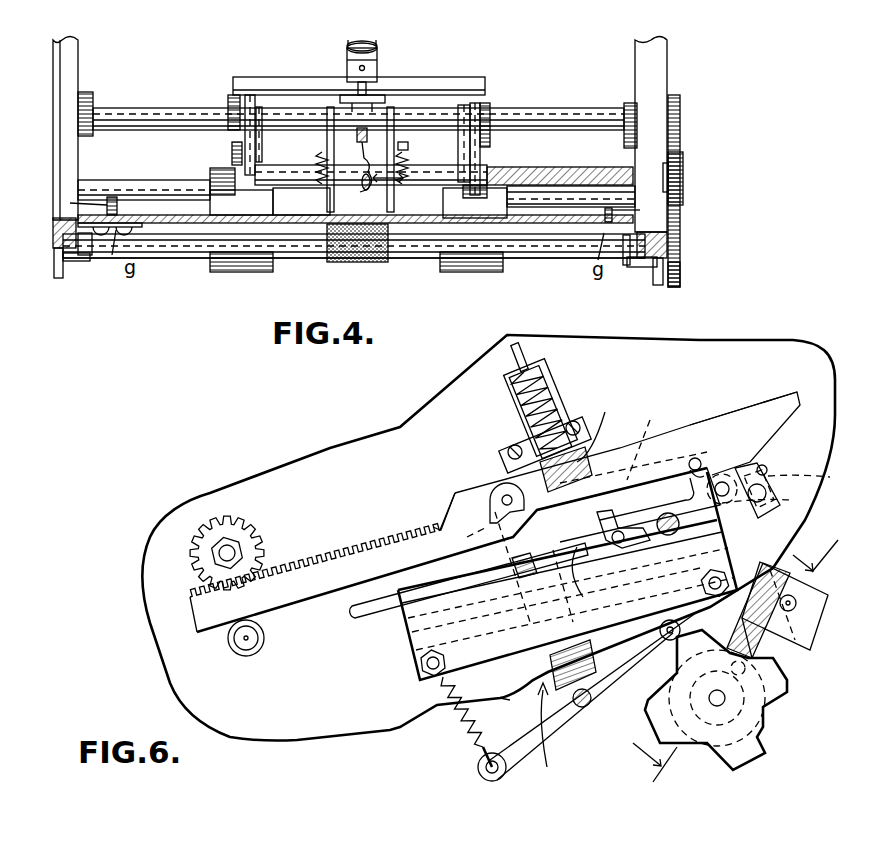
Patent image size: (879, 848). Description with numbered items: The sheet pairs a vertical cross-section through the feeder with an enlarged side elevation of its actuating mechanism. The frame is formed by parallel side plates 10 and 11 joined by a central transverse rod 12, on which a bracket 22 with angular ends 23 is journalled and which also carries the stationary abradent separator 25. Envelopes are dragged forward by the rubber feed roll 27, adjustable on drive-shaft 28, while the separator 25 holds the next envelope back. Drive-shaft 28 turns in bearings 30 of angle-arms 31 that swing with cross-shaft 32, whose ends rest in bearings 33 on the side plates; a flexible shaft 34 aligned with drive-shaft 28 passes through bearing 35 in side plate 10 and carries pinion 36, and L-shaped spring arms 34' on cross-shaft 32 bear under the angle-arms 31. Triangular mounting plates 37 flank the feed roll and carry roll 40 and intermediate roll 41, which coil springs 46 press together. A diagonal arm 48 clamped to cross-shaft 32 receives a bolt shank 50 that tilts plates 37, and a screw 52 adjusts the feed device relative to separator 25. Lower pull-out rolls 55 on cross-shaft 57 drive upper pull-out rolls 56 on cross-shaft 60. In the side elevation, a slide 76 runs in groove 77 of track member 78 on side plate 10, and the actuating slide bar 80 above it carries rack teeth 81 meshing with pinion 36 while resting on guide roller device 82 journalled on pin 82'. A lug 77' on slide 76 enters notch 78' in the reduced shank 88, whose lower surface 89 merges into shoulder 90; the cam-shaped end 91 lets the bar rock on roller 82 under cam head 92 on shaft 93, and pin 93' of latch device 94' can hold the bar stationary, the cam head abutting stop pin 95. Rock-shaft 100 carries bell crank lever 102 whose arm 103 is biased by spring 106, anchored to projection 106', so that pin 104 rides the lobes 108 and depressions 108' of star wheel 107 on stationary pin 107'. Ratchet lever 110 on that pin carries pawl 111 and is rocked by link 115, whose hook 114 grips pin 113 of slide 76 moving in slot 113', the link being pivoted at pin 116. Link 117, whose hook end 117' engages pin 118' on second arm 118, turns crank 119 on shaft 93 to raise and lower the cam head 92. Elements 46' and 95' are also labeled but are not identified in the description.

In FIG. 4, the side plate 10 is at (660, 62).
In FIG. 6, the side plate 10 is at (700, 340).
In FIG. 4, the side plate 11 is at (78, 44).
In FIG. 4, the central transverse rod 12 is at (555, 258).
In FIG. 4, the bracket 22 is at (112, 233).
In FIG. 4, the angular ends 23 is at (84, 261).
In FIG. 4, the separator 25 is at (362, 262).
In FIG. 4, the feed roll 27 is at (403, 178).
In FIG. 4, the drive-shaft 28 is at (458, 158).
In FIG. 4, the bearings 30 is at (487, 172).
In FIG. 4, the angle-arms 31 is at (228, 150).
In FIG. 4, the cross-shaft 32 is at (578, 108).
In FIG. 4, the bearings 33 is at (93, 100).
In FIG. 4, the flexible shaft 34 is at (560, 163).
In FIG. 6, the flexible shaft 34 is at (221, 548).
In FIG. 4, the L-shaped spring arms 34' is at (390, 143).
In FIG. 4, the bearing 35 is at (668, 164).
In FIG. 4, the pinion 36 is at (683, 177).
In FIG. 6, the pinion 36 is at (244, 538).
In FIG. 4, the mounting plates 37 is at (392, 107).
In FIG. 4, the roll 40 is at (300, 205).
In FIG. 4, the intermediate roll 41 is at (357, 140).
In FIG. 4, the contractile coil springs 46 is at (412, 156).
In FIG. 4, the spring 46' is at (307, 175).
In FIG. 4, the diagonal arm 48 is at (347, 62).
In FIG. 4, the bolt shank 50 is at (370, 103).
In FIG. 4, the screw 52 is at (364, 42).
In FIG. 4, the lower pull-out rolls 55 is at (262, 272).
In FIG. 4, the upper pull-out rolls 56 is at (210, 170).
In FIG. 4, the cross-shaft 57 is at (455, 77).
In FIG. 4, the cross-shaft 60 is at (172, 180).
In FIG. 6, the slide 76 is at (583, 597).
In FIG. 6, the groove 77 is at (404, 657).
In FIG. 6, the lug 77' is at (726, 467).
In FIG. 6, the track member 78 is at (567, 576).
In FIG. 6, the notch 78' is at (694, 432).
In FIG. 4, the actuating slide bar 80 is at (680, 278).
In FIG. 6, the actuating slide bar 80 is at (469, 481).
In FIG. 4, the rack teeth 81 is at (680, 120).
In FIG. 6, the rack teeth 81 is at (365, 545).
In FIG. 6, the guide roller device 82 is at (260, 632).
In FIG. 6, the pin 82' is at (255, 665).
In FIG. 6, the reduced shank 88 is at (628, 492).
In FIG. 6, the lower surface 89 is at (632, 498).
In FIG. 6, the abutment shoulder 90 is at (700, 460).
In FIG. 6, the cam-shaped forward end 91 is at (800, 412).
In FIG. 6, the cam head 92 is at (767, 478).
In FIG. 6, the cam shaft 93 is at (785, 497).
In FIG. 6, the latch pin 93' is at (559, 452).
In FIG. 6, the spring-biased latch device 94' is at (546, 401).
In FIG. 6, the stop pin 95 is at (778, 458).
In FIG. 6, the spring arm 95' is at (611, 428).
In FIG. 6, the rock-shaft 100 is at (585, 707).
In FIG. 6, the bell crank lever 102 is at (534, 735).
In FIG. 6, the arm 103 is at (589, 695).
In FIG. 6, the pin 104 is at (696, 605).
In FIG. 6, the contractile coil-spring 106 is at (622, 721).
In FIG. 6, the projection 106' is at (500, 714).
In FIG. 6, the star wheel 107 is at (737, 699).
In FIG. 6, the stationary pin 107' is at (755, 698).
In FIG. 6, the peripheral lobes 108 is at (730, 705).
In FIG. 6, the depressions 108' is at (692, 769).
In FIG. 6, the ratchet lever 110 is at (775, 640).
In FIG. 6, the spring-loaded pawl 111 is at (745, 664).
In FIG. 6, the pin 113 is at (688, 524).
In FIG. 6, the inclined elongated slot 113' is at (446, 598).
In FIG. 6, the hook 114 is at (595, 522).
In FIG. 6, the link 115 is at (770, 565).
In FIG. 6, the pin 116 is at (796, 603).
In FIG. 6, the link 117 is at (633, 442).
In FIG. 6, the hook end 117' is at (495, 487).
In FIG. 6, the second arm 118 is at (506, 597).
In FIG. 6, the pin 118' is at (460, 531).
In FIG. 6, the crank 119 is at (813, 477).